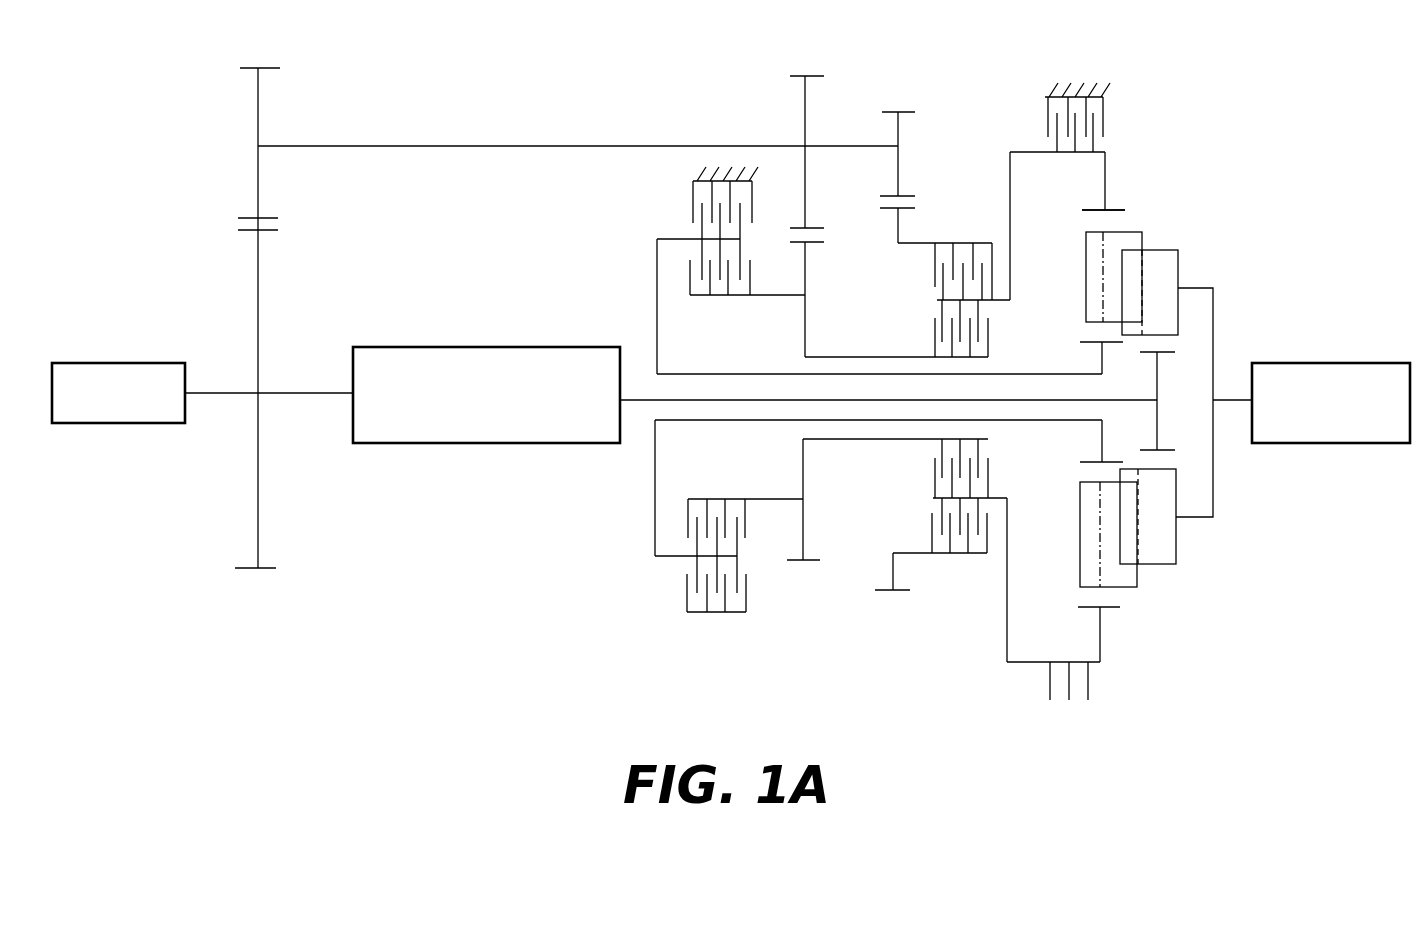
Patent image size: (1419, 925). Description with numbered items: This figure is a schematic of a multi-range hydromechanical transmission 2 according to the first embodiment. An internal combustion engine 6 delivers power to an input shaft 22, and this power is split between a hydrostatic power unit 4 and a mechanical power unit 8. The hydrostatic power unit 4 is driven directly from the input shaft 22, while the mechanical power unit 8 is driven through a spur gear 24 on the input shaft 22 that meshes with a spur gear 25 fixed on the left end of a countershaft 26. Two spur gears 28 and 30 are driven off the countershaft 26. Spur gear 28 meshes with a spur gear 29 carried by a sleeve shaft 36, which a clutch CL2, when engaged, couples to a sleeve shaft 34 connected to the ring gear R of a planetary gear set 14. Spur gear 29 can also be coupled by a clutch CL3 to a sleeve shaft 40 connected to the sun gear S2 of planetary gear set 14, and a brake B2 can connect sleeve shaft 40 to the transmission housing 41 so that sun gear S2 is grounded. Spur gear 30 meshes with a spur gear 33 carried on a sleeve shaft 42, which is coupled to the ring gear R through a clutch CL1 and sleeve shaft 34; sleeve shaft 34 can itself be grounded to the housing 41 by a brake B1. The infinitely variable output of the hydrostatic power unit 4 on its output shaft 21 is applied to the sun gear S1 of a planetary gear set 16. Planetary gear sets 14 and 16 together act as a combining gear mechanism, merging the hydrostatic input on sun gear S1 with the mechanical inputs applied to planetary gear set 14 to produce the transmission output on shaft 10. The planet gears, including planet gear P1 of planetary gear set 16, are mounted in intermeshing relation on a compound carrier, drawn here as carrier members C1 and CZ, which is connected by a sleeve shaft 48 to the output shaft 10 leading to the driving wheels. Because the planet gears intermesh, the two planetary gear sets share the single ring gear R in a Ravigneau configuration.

The multi-range hydromechanical transmission 2 is at (321, 600).
The hydrostatic power unit 4 is at (483, 443).
The internal combustion engine 6 is at (108, 423).
The mechanical power unit 8 is at (998, 101).
The output shaft 10 is at (1237, 398).
The planetary gear set 14 is at (1076, 486).
The planetary gear set 16 is at (1196, 541).
The output shaft 21 is at (768, 400).
The input shaft 22 is at (225, 393).
The spur gear 24 is at (272, 232).
The spur gear 25 is at (253, 218).
The countershaft 26 is at (372, 146).
The spur gear 28 is at (808, 228).
The spur gear 29 is at (817, 247).
The spur gear 30 is at (900, 196).
The spur gear 33 is at (887, 208).
The sleeve shaft 34 is at (1012, 212).
The sleeve shaft 36 is at (860, 357).
The sleeve shaft 40 is at (726, 373).
The transmission housing 41 is at (693, 170).
The sleeve shaft 42 is at (920, 557).
The sleeve shaft 48 is at (1203, 518).
The brake B1 is at (1105, 112).
The brake B2 is at (683, 195).
The clutch CL1 is at (945, 271).
The clutch CL2 is at (990, 328).
The clutch CL3 is at (675, 268).
The ring gear R is at (1125, 210).
The carrier CZ is at (1142, 238).
The planet gear P1 is at (1168, 260).
The carrier C1 is at (1217, 297).
The sun gear S1 is at (1170, 352).
The sun gear S2 is at (1118, 344).